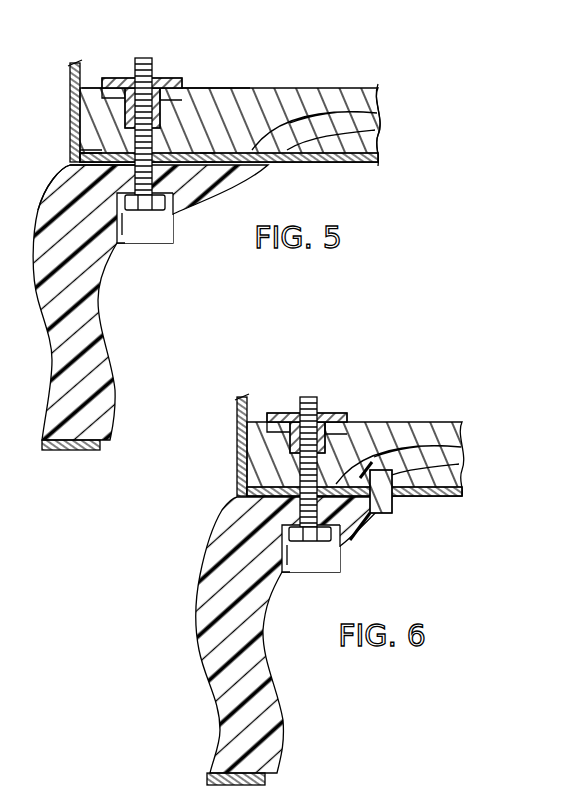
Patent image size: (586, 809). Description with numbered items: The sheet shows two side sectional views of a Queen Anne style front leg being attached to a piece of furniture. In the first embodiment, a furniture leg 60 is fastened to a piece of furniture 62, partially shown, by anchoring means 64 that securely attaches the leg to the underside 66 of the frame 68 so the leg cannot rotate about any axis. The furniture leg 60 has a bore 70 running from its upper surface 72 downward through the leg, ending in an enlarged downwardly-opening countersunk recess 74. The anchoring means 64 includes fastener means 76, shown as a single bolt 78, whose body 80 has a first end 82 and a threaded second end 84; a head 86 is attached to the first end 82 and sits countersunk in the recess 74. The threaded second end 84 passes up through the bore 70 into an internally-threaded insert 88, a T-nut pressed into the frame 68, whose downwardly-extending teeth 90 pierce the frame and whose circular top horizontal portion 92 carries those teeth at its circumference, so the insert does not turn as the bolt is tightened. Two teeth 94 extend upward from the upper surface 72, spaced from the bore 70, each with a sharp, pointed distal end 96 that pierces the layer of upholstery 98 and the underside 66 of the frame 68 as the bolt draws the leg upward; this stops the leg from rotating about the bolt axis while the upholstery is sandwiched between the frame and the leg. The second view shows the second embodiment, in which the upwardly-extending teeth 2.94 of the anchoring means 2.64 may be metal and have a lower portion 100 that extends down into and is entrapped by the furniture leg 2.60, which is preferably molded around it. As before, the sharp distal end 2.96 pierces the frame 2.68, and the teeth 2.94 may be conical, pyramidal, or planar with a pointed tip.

In FIG. 5, the furniture leg 60 is at (90, 301).
In FIG. 5, the piece of furniture 62 is at (313, 95).
In FIG. 5, the anchoring means 64 is at (240, 86).
In FIG. 5, the underside 66 is at (273, 160).
In FIG. 5, the frame 68 is at (378, 106).
In FIG. 5, the bore 70 is at (172, 133).
In FIG. 5, the upper surface 72 is at (78, 153).
In FIG. 5, the countersunk recess 74 is at (123, 244).
In FIG. 5, the fastener means 76 is at (148, 56).
In FIG. 5, the bolt 78 is at (143, 178).
In FIG. 5, the body 80 is at (78, 127).
In FIG. 5, the first end 82 is at (85, 192).
In FIG. 5, the threaded second end 84 is at (137, 78).
In FIG. 5, the head 86 is at (143, 211).
In FIG. 5, the internally-threaded insert 88 is at (165, 82).
In FIG. 5, the teeth 90 is at (103, 85).
In FIG. 5, the circular top horizontal portion 92 is at (100, 95).
In FIG. 5, the teeth 94 is at (210, 154).
In FIG. 5, the distal end 96 is at (208, 157).
In FIG. 5, the layer of upholstery 98 is at (338, 160).
In FIG. 6, the furniture leg 2.60 is at (275, 698).
In FIG. 6, the anchoring means 2.64 is at (372, 409).
In FIG. 6, the frame 2.68 is at (447, 427).
In FIG. 6, the teeth 2.94 is at (394, 500).
In FIG. 6, the distal end 2.96 is at (380, 476).
In FIG. 6, the lower portion 100 is at (375, 515).